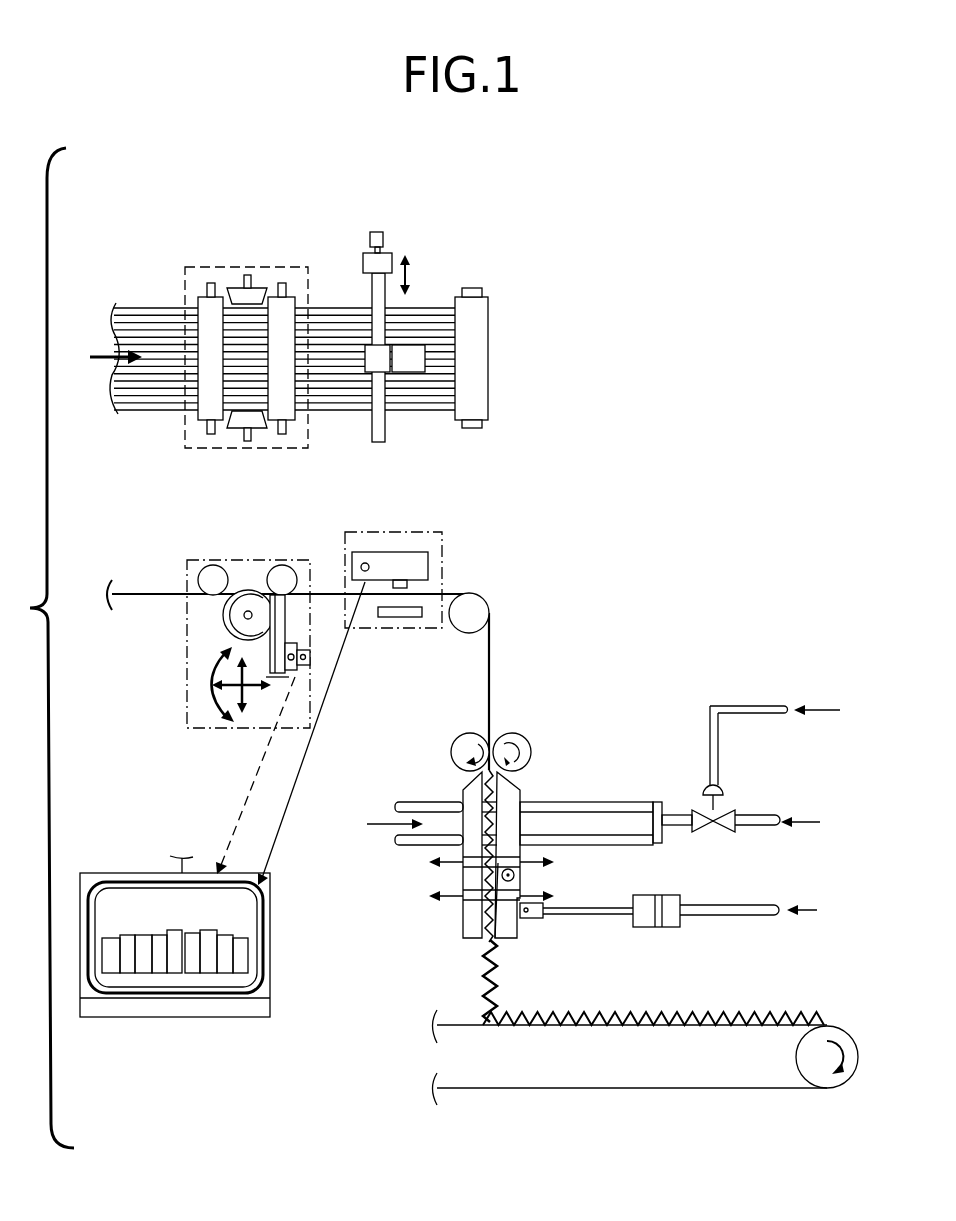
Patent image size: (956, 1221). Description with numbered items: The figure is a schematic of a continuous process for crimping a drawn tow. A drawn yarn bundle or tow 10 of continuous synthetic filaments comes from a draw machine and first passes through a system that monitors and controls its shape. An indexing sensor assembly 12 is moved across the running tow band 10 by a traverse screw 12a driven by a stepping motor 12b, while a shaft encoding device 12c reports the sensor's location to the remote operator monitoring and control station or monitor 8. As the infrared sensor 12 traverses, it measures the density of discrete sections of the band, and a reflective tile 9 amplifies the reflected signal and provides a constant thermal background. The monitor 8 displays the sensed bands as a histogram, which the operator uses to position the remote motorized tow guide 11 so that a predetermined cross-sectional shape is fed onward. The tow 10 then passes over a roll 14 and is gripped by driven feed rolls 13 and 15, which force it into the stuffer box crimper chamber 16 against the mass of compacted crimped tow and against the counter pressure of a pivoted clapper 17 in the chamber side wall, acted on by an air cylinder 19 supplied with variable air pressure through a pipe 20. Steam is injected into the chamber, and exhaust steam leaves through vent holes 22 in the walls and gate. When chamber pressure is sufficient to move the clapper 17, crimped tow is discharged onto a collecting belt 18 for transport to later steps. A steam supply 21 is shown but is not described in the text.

The monitor 8 is at (128, 873).
The reflective tile 9 is at (402, 617).
The tow 10 is at (157, 308).
The motorized tow guide 11 is at (253, 567).
The indexing sensor assembly 12 is at (405, 368).
The traverse screw 12a is at (372, 442).
The stepping motor 12b is at (363, 258).
The shaft encoding device 12c is at (385, 239).
The feed roll 13 is at (466, 735).
The roll 14 is at (478, 290).
The feed roll 15 is at (516, 735).
The stuffer box crimper chamber 16 is at (462, 940).
The pivoted clapper 17 is at (510, 940).
The collecting belt 18 is at (622, 1027).
The air cylinder 19 is at (665, 927).
The pipe 20 is at (748, 915).
The steam cylinder 21 is at (577, 835).
The vent holes 22 is at (430, 862).